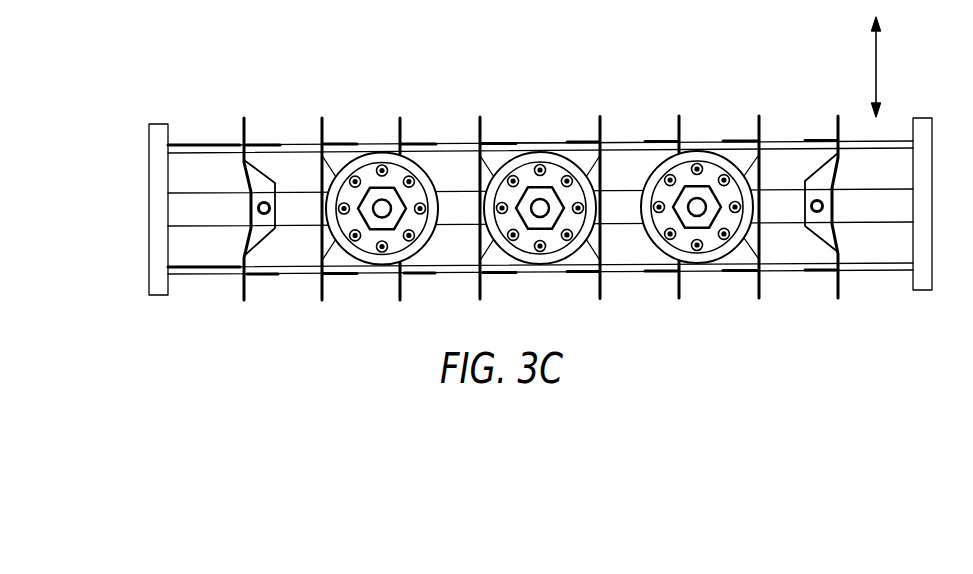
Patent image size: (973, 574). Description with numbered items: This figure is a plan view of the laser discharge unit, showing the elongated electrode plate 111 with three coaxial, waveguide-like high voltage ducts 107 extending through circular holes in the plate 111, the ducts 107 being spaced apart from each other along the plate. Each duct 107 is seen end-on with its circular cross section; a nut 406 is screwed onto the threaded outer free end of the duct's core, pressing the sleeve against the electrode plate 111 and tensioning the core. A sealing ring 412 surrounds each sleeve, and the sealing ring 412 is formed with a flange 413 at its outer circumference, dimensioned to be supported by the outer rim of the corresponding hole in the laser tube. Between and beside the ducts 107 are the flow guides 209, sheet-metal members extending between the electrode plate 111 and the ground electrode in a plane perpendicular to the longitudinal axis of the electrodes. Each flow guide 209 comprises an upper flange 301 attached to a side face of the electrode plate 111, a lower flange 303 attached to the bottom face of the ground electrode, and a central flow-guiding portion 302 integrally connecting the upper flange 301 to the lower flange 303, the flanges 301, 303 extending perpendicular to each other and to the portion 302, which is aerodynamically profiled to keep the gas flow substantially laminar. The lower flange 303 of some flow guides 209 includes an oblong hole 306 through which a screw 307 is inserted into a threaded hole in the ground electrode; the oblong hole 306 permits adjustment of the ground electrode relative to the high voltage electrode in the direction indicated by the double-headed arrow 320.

The electrode plate 111 is at (198, 160).
The oblong hole 306 is at (252, 194).
The screw 307 is at (268, 202).
The lower flange 303 is at (279, 212).
The flange 413 is at (367, 160).
The nut 406 is at (382, 190).
The high voltage duct 107 is at (409, 176).
The upper flange 301 is at (575, 141).
The central flow-guiding portion 302 is at (599, 140).
The flow guide 209 is at (603, 128).
The sealing ring 412 is at (705, 141).
The double-headed arrow 320 is at (878, 67).